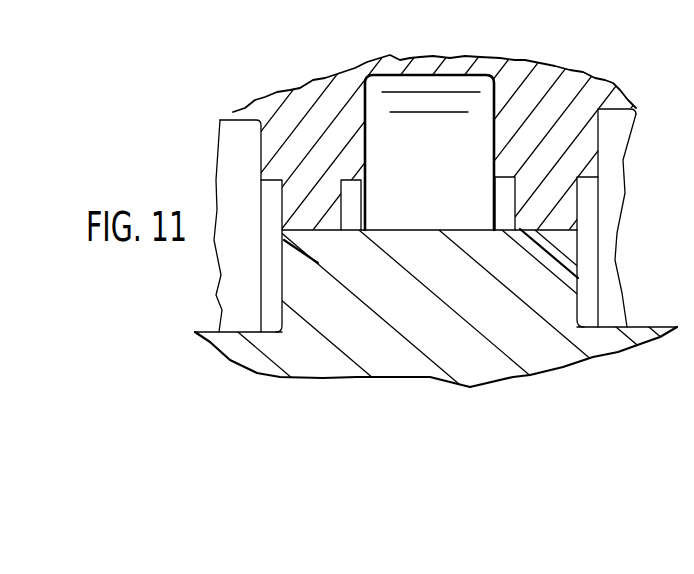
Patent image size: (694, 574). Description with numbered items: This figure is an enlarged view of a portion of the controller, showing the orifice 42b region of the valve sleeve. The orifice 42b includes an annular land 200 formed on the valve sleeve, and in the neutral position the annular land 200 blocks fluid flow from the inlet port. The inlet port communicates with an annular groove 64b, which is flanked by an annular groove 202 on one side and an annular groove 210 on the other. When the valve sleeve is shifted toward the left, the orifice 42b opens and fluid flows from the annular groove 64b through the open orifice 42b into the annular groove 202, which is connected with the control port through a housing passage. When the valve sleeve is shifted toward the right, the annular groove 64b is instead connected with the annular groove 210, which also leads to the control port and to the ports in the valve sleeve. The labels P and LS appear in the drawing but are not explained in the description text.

The annular land 200 is at (425, 230).
The annular groove 210 is at (233, 133).
The annular groove 202 is at (604, 150).
The annular groove 64b is at (388, 168).
The part P is at (431, 122).
The locating surface LS is at (250, 168).
The orifice 42b is at (300, 244).